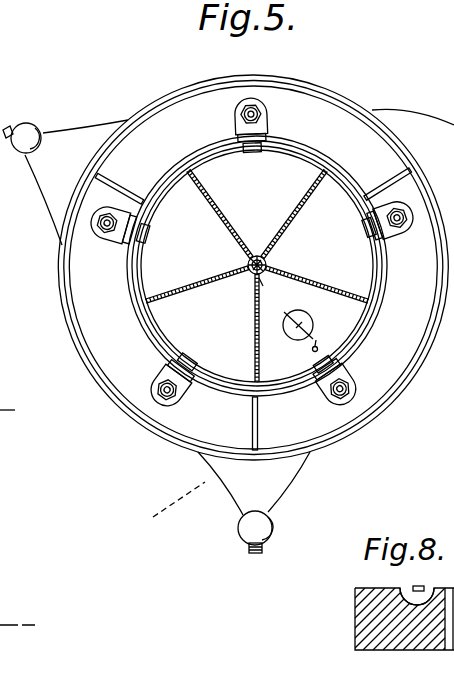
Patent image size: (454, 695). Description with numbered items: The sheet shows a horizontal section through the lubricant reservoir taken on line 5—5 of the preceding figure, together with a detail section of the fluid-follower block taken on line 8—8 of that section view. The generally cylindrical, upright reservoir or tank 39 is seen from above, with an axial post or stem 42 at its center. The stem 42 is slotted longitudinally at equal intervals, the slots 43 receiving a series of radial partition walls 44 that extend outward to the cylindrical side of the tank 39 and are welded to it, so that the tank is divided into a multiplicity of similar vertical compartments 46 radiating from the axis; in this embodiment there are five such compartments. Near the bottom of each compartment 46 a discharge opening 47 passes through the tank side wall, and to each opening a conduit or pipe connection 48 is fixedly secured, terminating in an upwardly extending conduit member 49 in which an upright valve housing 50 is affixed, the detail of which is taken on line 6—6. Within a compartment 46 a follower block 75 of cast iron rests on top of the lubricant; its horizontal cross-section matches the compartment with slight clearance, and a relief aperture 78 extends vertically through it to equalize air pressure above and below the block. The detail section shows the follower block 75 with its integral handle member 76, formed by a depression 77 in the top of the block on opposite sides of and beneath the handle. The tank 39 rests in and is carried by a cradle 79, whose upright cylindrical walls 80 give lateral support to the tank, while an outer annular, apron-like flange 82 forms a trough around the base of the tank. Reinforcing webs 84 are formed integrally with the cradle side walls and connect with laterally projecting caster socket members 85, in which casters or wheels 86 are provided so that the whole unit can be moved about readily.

In FIG. 5, the section line 5— 5 is at (10, 403).
In FIG. 5, the section line 6— 6 is at (166, 516).
In FIG. 5, the section line 8— 8 is at (250, 283).
In FIG. 5, the reservoir or tank 39 is at (317, 163).
In FIG. 5, the axial post or stem 42 is at (267, 265).
In FIG. 5, the slots 43 is at (251, 265).
In FIG. 5, the radial partition walls 44 is at (206, 192).
In FIG. 5, the compartments 46 is at (255, 259).
In FIG. 5, the discharge opening 47 is at (254, 150).
In FIG. 5, the conduit or pipe connection 48 is at (365, 197).
In FIG. 5, the upwardly extending conduit member 49 is at (270, 124).
In FIG. 5, the valve housing 50 is at (236, 120).
In FIG. 5, the follower block 75 is at (288, 335).
In FIG. 8, the follower block 75 is at (362, 598).
In FIG. 5, the handle member 76 is at (310, 322).
In FIG. 8, the handle member 76 is at (428, 590).
In FIG. 5, the depression 77 is at (262, 280).
In FIG. 8, the depression 77 is at (405, 590).
In FIG. 5, the relief aperture 78 is at (318, 348).
In FIG. 5, the cradle 79 is at (98, 291).
In FIG. 5, the upright cylindrical walls 80 is at (157, 183).
In FIG. 5, the outer annular apron-like flange 82 is at (116, 400).
In FIG. 5, the reinforcing webs 84 is at (110, 184).
In FIG. 5, the caster socket members 85 is at (52, 185).
In FIG. 5, the casters or wheels 86 is at (30, 123).